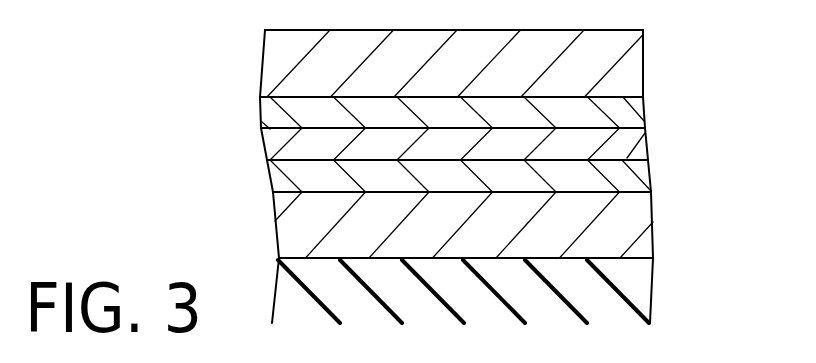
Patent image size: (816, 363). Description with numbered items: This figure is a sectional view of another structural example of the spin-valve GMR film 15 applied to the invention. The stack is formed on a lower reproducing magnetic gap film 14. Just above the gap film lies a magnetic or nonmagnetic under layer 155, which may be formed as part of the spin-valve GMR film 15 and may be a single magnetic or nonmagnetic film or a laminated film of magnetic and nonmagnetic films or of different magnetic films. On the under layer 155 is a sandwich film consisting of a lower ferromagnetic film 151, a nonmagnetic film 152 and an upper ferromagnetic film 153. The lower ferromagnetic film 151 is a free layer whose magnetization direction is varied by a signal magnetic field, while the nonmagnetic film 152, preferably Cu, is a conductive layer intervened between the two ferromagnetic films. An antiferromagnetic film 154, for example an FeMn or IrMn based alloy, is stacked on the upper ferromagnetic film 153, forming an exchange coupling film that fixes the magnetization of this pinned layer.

The lower reproducing magnetic gap film 14 is at (633, 295).
The spin-valve GMR film 15 is at (745, 23).
The ferromagnetic film 151 is at (637, 177).
The nonmagnetic film 152 is at (640, 150).
The ferromagnetic film 153 is at (630, 107).
The antiferromagnetic film 154 is at (630, 58).
The under layer 155 is at (637, 227).